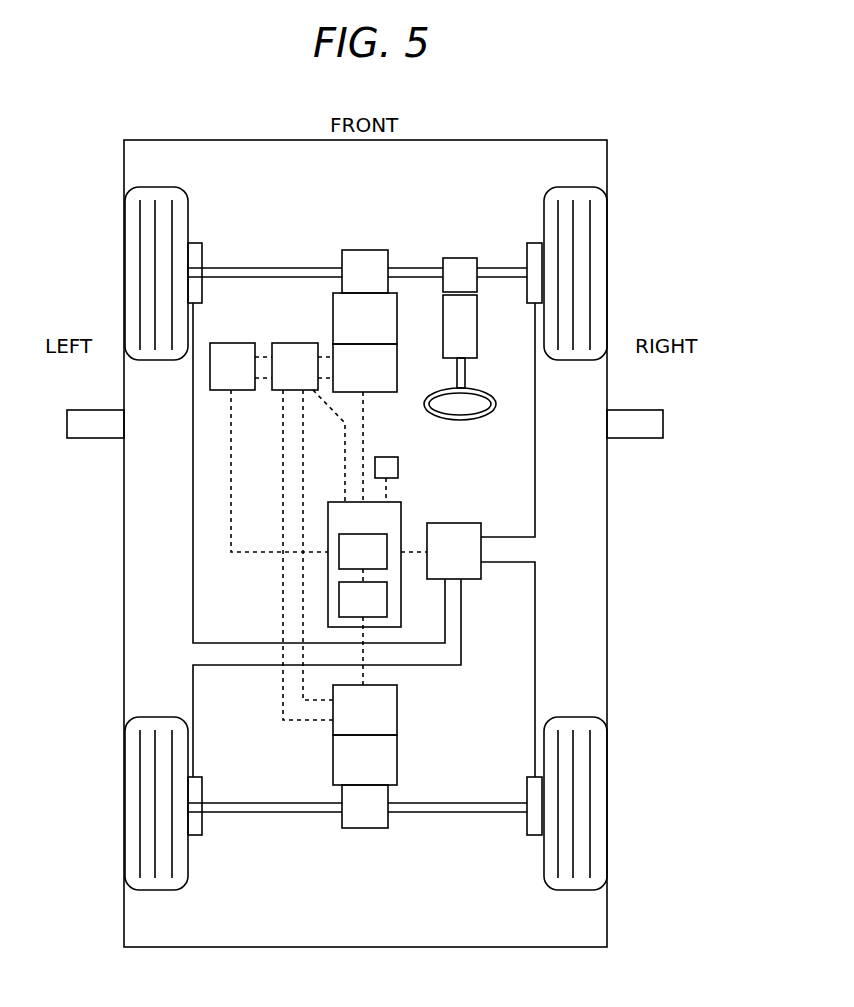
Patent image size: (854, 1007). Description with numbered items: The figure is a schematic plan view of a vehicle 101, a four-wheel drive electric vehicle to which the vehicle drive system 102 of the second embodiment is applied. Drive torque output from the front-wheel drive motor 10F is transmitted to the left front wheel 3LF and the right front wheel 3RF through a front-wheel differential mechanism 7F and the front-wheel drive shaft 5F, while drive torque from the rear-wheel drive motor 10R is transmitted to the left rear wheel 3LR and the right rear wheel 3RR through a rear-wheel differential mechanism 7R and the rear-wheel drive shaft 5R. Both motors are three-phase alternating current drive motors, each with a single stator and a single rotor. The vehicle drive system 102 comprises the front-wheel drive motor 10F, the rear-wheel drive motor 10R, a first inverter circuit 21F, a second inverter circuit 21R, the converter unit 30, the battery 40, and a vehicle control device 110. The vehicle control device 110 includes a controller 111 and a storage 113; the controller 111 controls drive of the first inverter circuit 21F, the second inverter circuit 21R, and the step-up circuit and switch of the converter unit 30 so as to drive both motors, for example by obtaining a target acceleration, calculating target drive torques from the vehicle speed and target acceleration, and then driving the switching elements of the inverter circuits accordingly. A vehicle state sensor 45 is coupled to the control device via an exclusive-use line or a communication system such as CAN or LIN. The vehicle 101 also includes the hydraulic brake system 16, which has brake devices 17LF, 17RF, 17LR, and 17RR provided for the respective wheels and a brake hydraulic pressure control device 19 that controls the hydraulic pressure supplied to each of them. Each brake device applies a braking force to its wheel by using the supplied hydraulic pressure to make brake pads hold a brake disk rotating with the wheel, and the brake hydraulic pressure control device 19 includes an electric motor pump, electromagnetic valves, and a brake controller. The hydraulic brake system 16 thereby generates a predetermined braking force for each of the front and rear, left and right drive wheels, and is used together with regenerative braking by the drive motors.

The vehicle 101 is at (612, 134).
The left front wheel 3LF is at (127, 243).
The right front wheel 3RF is at (600, 242).
The left rear wheel 3LR is at (127, 821).
The right rear wheel 3RR is at (600, 822).
The brake device 17LF is at (203, 250).
The brake device 17RF is at (523, 253).
The brake device 17LR is at (200, 834).
The brake device 17RR is at (523, 834).
The front-wheel drive shaft 5F is at (222, 283).
The rear-wheel drive shaft 5R is at (266, 812).
The front-wheel differential mechanism 7F is at (365, 271).
The front-wheel drive motor 10F is at (365, 318).
The first inverter circuit 21F is at (365, 368).
The rear-wheel differential mechanism 7R is at (365, 806).
The rear-wheel drive motor 10R is at (365, 760).
The second inverter circuit 21R is at (365, 710).
The vehicle drive system 102 is at (293, 339).
The battery 40 is at (232, 366).
The converter unit 30 is at (295, 366).
The vehicle state sensor 45 is at (387, 455).
The vehicle control device 110 is at (364, 564).
The controller 111 is at (363, 551).
The storage 113 is at (363, 599).
The hydraulic brake system 16 is at (470, 516).
The brake hydraulic pressure control device 19 is at (454, 551).